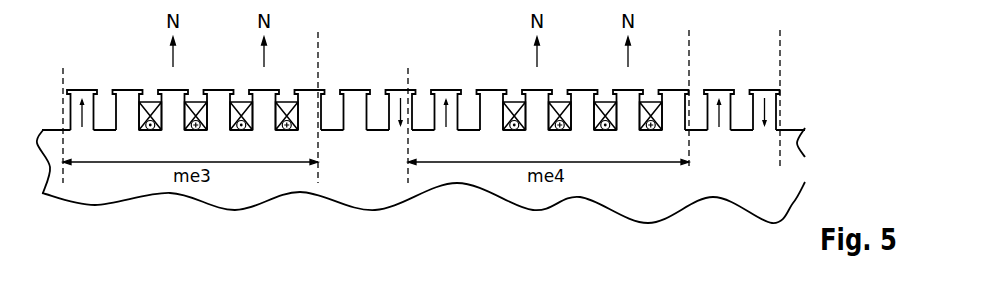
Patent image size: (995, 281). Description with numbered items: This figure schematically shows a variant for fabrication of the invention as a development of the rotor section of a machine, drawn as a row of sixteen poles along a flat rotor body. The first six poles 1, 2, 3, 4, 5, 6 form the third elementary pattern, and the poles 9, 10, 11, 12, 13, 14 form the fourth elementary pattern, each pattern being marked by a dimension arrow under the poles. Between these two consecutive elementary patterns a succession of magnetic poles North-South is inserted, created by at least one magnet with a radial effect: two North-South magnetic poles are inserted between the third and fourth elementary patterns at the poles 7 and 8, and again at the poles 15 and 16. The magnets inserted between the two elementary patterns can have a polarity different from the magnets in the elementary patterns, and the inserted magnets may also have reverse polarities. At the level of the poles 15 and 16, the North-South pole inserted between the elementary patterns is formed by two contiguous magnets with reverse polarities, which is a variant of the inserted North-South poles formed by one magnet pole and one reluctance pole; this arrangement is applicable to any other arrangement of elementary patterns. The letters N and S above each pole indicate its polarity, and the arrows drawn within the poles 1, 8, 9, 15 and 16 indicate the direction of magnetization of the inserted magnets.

The pole 1 is at (82, 110).
The pole 2 is at (128, 110).
The pole 3 is at (173, 110).
The pole 4 is at (219, 110).
The pole 5 is at (264, 110).
The pole 6 is at (310, 110).
The pole 7 is at (355, 110).
The pole 8 is at (401, 110).
The pole 9 is at (446, 110).
The pole 10 is at (492, 110).
The pole 11 is at (537, 110).
The pole 12 is at (583, 110).
The pole 13 is at (628, 110).
The pole 14 is at (674, 110).
The pole 15 is at (719, 110).
The pole 16 is at (765, 110).